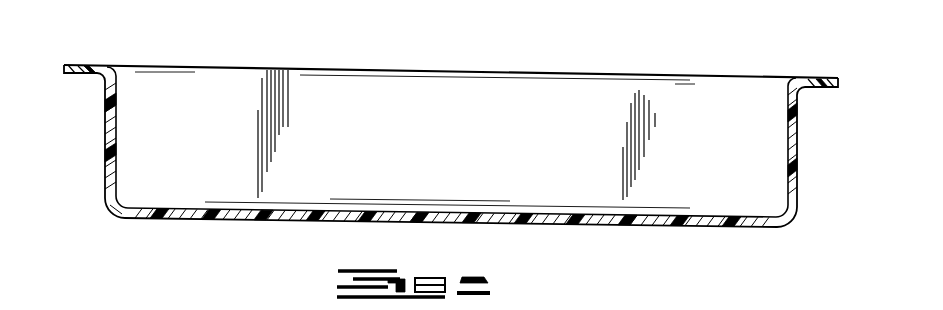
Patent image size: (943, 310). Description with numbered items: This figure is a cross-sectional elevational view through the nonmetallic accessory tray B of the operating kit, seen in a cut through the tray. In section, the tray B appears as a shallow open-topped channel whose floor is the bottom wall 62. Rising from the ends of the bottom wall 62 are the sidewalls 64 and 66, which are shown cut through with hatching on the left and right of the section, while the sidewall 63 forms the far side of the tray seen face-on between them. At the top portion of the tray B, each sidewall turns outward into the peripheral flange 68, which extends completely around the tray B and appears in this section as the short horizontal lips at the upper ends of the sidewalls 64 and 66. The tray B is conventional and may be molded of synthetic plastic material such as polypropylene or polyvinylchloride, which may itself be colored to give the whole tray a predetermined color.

The accessory tray B is at (444, 126).
The bottom wall 62 is at (362, 212).
The sidewall 63 is at (456, 135).
The sidewall 64 is at (104, 128).
The sidewall 66 is at (790, 142).
The peripheral flange 68 is at (73, 72).